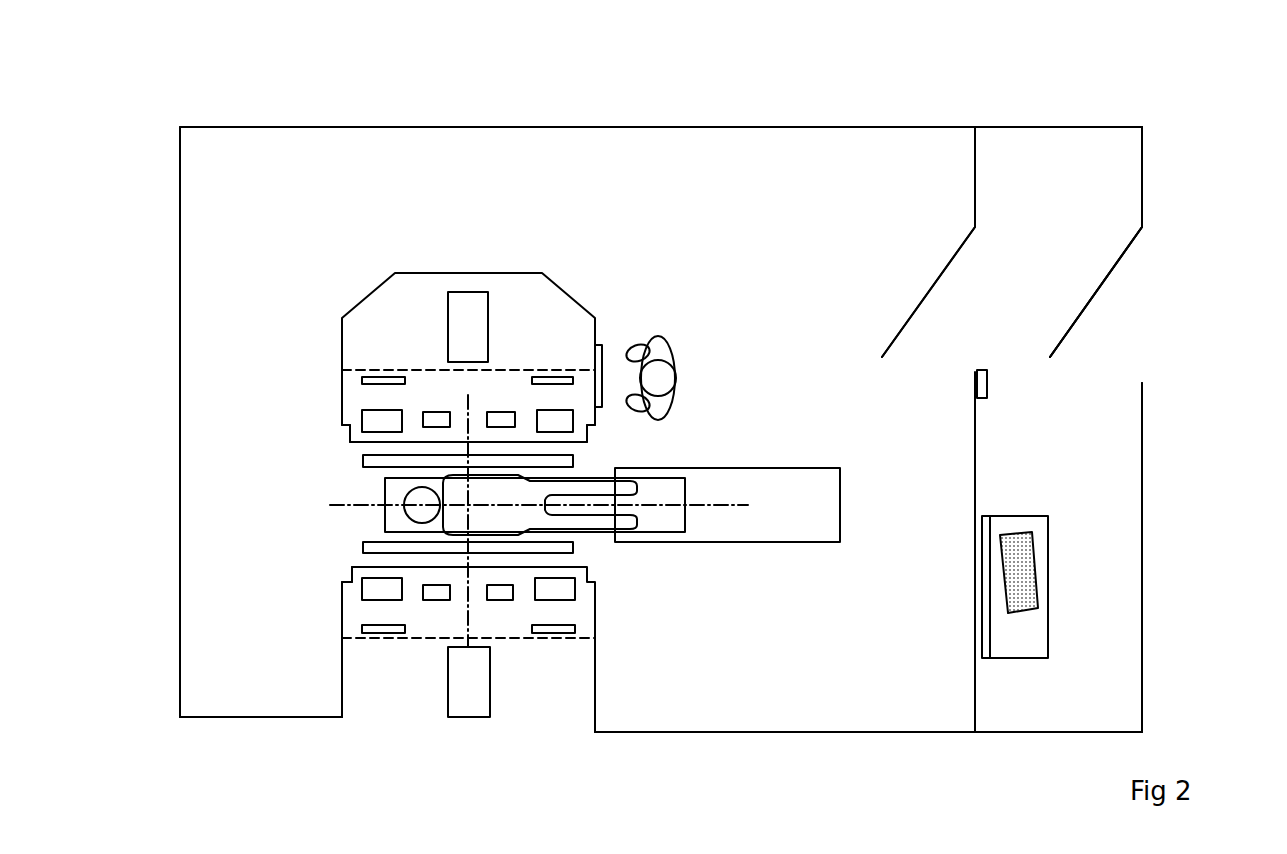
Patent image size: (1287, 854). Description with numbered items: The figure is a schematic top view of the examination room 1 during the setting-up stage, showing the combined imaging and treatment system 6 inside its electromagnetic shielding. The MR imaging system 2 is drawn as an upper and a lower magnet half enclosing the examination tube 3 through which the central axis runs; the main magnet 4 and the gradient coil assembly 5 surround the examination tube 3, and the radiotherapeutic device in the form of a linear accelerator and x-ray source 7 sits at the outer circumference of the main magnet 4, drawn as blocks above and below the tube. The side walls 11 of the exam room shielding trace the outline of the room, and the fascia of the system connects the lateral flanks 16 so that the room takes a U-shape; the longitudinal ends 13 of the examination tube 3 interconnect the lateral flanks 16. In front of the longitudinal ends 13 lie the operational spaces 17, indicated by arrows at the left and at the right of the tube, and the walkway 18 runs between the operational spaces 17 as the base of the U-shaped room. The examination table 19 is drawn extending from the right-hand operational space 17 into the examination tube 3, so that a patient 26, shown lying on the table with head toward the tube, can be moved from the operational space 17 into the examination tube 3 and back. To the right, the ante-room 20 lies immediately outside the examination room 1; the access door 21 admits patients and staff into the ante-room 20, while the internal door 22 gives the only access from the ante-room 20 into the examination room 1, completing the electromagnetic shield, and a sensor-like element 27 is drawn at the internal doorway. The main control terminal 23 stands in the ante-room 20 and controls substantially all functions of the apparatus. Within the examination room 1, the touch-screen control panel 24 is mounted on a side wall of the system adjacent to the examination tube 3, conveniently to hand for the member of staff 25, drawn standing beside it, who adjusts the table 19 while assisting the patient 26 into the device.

The examination room 1 is at (747, 127).
The MR imaging system 2 is at (328, 413).
The examination tube 3 is at (355, 447).
The main magnet 4 is at (575, 418).
The gradient coil assembly 5 is at (365, 547).
The imaging and treatment system 6 is at (325, 597).
The linear accelerator and x-ray source 7 is at (469, 322).
The side walls 11 is at (885, 127).
The longitudinal ends 13 is at (337, 567).
The lateral flanks 16 is at (295, 717).
The operational spaces 17 is at (218, 487).
The walkway 18 is at (428, 207).
The examination table 19 is at (670, 475).
The ante-room 20 is at (1085, 202).
The access door 21 is at (1082, 313).
The internal door 22 is at (917, 308).
The main control terminal 23 is at (1027, 572).
The touch-screen control panel 24 is at (602, 355).
The member of staff 25 is at (673, 352).
The patient 26 is at (603, 523).
The door sensor 27 is at (977, 374).